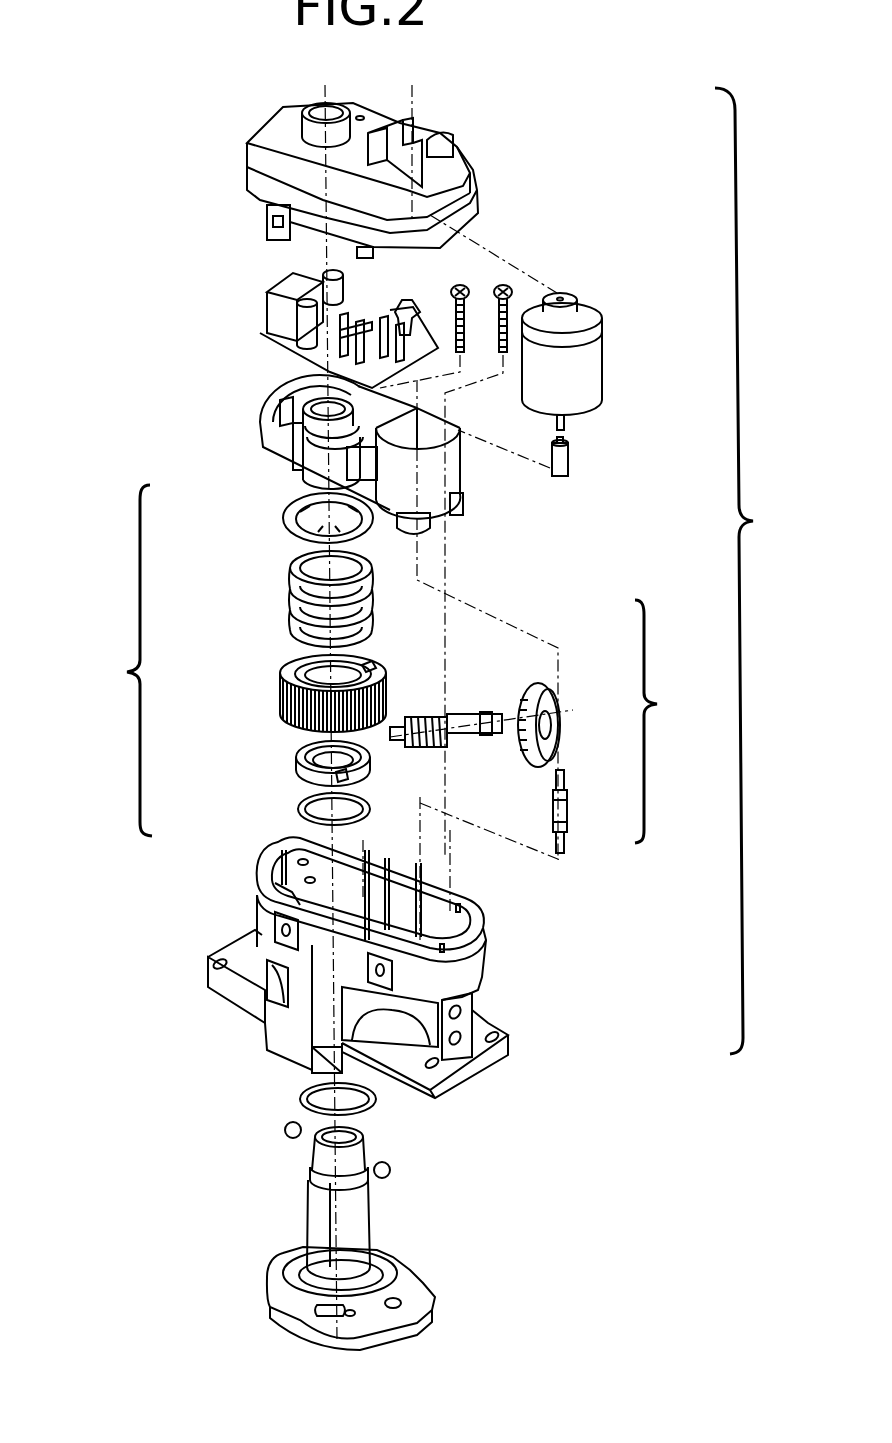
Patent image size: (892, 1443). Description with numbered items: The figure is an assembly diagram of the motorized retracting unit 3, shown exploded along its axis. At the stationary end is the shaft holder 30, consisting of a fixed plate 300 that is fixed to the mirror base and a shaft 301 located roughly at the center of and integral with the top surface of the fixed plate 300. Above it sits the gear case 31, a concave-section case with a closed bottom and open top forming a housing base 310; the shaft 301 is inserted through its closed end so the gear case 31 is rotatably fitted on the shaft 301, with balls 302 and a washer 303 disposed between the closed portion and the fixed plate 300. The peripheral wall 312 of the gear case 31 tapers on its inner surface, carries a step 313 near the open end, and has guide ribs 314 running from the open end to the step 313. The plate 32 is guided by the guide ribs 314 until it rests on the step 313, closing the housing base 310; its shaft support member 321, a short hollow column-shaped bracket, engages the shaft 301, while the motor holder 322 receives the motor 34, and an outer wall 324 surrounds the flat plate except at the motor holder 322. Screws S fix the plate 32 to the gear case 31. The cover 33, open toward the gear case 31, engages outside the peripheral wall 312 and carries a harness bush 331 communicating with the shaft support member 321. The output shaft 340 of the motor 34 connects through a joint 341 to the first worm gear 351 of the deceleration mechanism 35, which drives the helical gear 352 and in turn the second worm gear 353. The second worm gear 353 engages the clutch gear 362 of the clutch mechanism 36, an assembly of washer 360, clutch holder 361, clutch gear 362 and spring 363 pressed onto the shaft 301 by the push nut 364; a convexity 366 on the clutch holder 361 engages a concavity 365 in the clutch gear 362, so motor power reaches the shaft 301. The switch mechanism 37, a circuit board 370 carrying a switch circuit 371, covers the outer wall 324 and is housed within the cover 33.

The motorized retracting unit 3 is at (745, 571).
The shaft holder 30 is at (350, 1210).
The fixed plate 300 is at (430, 1268).
The shaft 301 is at (316, 1215).
The balls 302 is at (284, 1131).
The washer 303 is at (302, 1102).
The gear case 31 is at (381, 967).
The housing base 310 is at (303, 862).
The peripheral wall 312 is at (483, 911).
The step 313 is at (300, 894).
The guide ribs 314 is at (383, 887).
The plate 32 is at (352, 465).
The shaft support member 321 is at (300, 427).
The motor holder 322 is at (458, 493).
The outer wall 324 is at (268, 408).
The cover 33 is at (402, 162).
The harness bush 331 is at (344, 106).
The motor 34 is at (590, 385).
The output shaft 340 is at (565, 422).
The joint 341 is at (575, 465).
The deceleration mechanism 35 is at (548, 726).
The first worm gear 351 is at (570, 812).
The helical gear 352 is at (543, 690).
The second worm gear 353 is at (447, 710).
The clutch mechanism 36 is at (260, 661).
The washer 360 is at (300, 813).
The clutch holder 361 is at (273, 773).
The clutch gear 362 is at (302, 676).
The spring 363 is at (290, 577).
The push nut 364 is at (288, 522).
The concavity 365 is at (372, 664).
The convexity 366 is at (343, 775).
The switch mechanism 37 is at (296, 307).
The circuit board 370 is at (290, 346).
The switch circuit 371 is at (285, 280).
The screws S is at (503, 285).